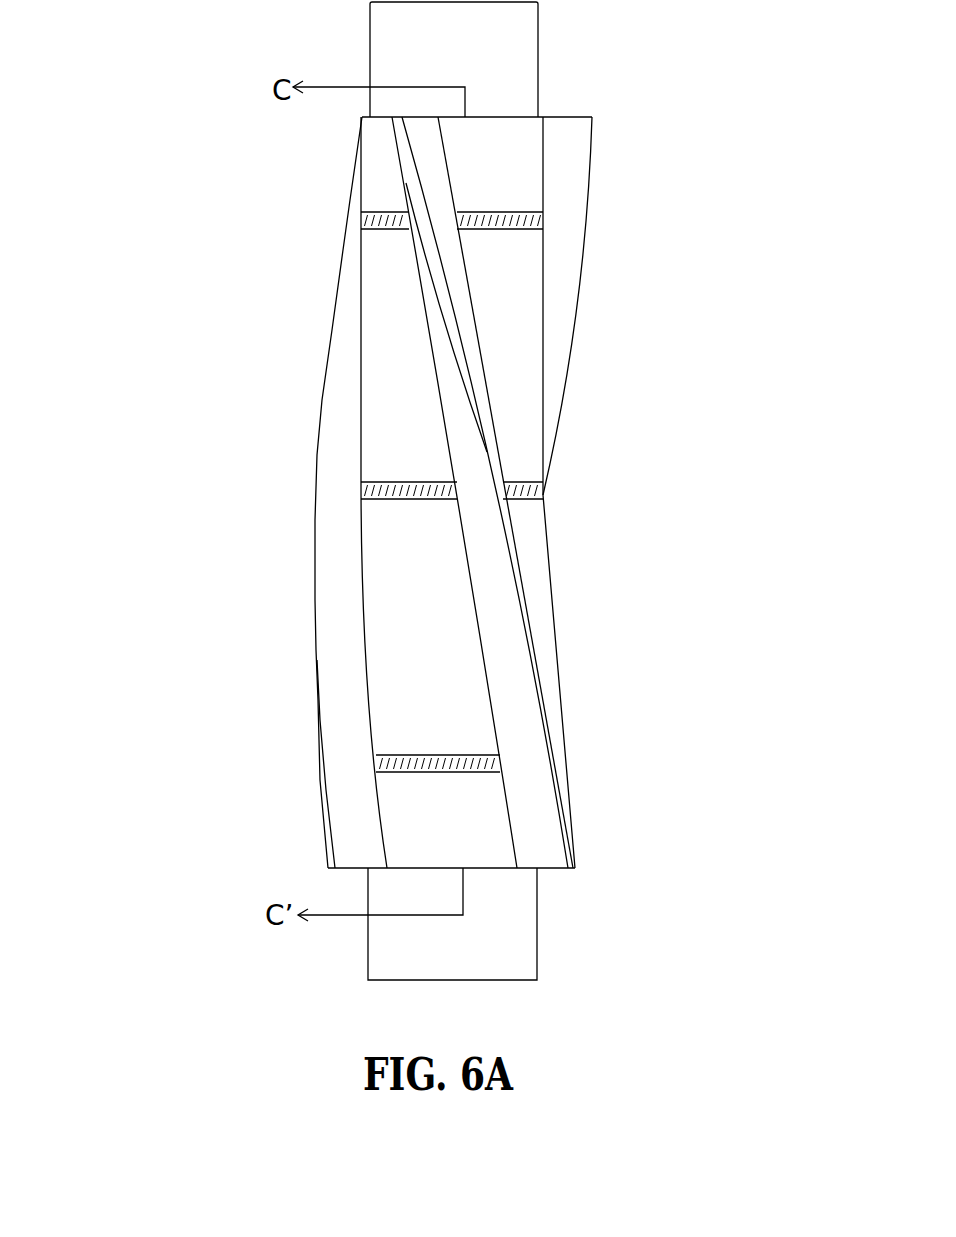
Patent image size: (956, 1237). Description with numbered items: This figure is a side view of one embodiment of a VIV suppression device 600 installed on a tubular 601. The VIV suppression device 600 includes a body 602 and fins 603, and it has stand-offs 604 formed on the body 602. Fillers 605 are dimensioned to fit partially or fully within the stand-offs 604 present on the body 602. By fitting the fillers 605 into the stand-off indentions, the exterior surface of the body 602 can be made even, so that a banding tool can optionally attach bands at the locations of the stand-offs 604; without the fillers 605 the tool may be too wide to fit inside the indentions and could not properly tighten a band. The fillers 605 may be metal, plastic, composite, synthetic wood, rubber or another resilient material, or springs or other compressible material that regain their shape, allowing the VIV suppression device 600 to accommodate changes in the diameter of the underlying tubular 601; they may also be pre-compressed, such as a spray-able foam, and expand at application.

The VIV suppression device 600 is at (438, 493).
The tubular 601 is at (368, 34).
The body 602 is at (517, 293).
The fins 603 is at (316, 453).
The stand-offs 604 is at (408, 478).
The fillers 605 is at (378, 214).